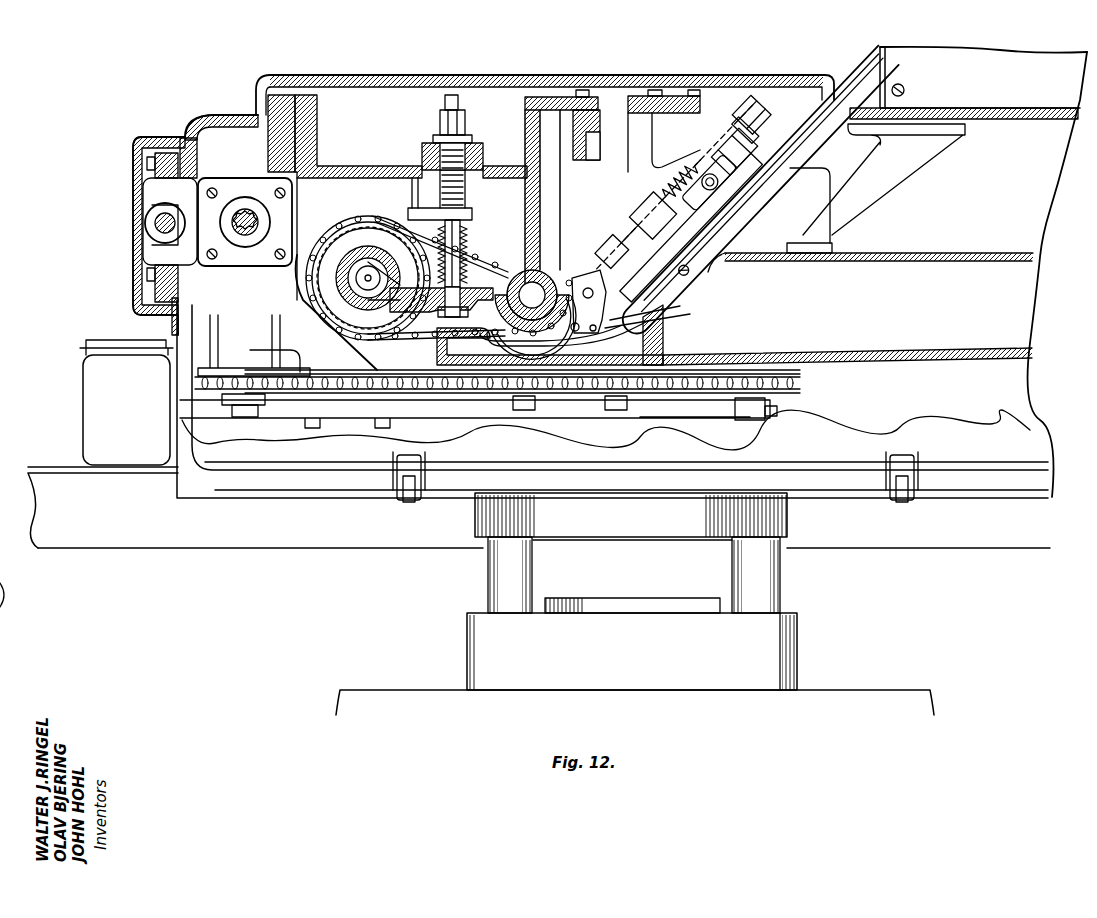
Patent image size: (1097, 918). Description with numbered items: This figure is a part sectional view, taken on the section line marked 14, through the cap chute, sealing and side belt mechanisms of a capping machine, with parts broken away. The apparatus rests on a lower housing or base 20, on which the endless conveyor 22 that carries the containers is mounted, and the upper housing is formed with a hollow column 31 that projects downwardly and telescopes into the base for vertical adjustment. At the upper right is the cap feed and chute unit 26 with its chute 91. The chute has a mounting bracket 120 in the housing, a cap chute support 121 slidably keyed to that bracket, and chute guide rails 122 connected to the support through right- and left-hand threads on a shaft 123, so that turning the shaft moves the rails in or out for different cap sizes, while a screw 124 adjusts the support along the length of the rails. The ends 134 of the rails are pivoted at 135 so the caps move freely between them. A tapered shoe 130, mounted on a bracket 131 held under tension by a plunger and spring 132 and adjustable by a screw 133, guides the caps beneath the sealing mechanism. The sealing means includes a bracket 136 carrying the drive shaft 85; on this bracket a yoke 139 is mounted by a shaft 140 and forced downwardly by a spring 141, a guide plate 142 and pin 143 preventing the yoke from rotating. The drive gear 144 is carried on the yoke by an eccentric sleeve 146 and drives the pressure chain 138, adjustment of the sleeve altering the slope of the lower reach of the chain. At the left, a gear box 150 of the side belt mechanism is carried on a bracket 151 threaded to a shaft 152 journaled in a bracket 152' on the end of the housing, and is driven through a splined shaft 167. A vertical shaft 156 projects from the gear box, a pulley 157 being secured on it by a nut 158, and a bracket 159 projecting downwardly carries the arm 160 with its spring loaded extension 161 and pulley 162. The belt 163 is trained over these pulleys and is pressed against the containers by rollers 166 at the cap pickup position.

The section line 14- 14 is at (266, 70).
The gear box 150 is at (212, 176).
The shaft 167 is at (252, 220).
The shaft 152 is at (137, 240).
The bracket 152' is at (121, 171).
The bracket 151 is at (152, 216).
The eccentric sleeve 146 is at (346, 266).
The drive gear 144 is at (332, 212).
The pressure chain 138 is at (472, 299).
The guide plate 142 is at (462, 218).
The pin 143 is at (422, 210).
The shaft 140 is at (458, 242).
The spring 141 is at (440, 276).
The yoke 139 is at (430, 311).
The bracket 136 is at (540, 200).
The shaft 85 is at (525, 290).
The tapered shoe 130 is at (548, 335).
The mounting bracket 120 is at (648, 150).
The chute guide rails 122 is at (796, 160).
The chute 91 is at (850, 68).
The bracket 131 is at (693, 202).
The cap chute support 121 is at (732, 150).
The screw 124 is at (750, 112).
The shaft 123 is at (722, 190).
The plunger and spring 132 is at (640, 208).
The screw 133 is at (612, 250).
The pivot 135 is at (650, 287).
The ends of the guide rails 134 is at (655, 312).
The cap feed and chute unit 26 is at (992, 79).
The bracket 159 is at (296, 350).
The pulley 157 is at (266, 397).
The nut 158 is at (260, 411).
The belt 163 is at (798, 380).
The pulley 162 is at (790, 394).
The arm 160 is at (452, 412).
The rollers 166 is at (540, 404).
The spring loaded extension 161 is at (746, 420).
The shaft 156 is at (606, 433).
The container C is at (132, 399).
The endless conveyor 22 is at (52, 466).
The hollow column 31 is at (645, 525).
The base 20 is at (810, 686).